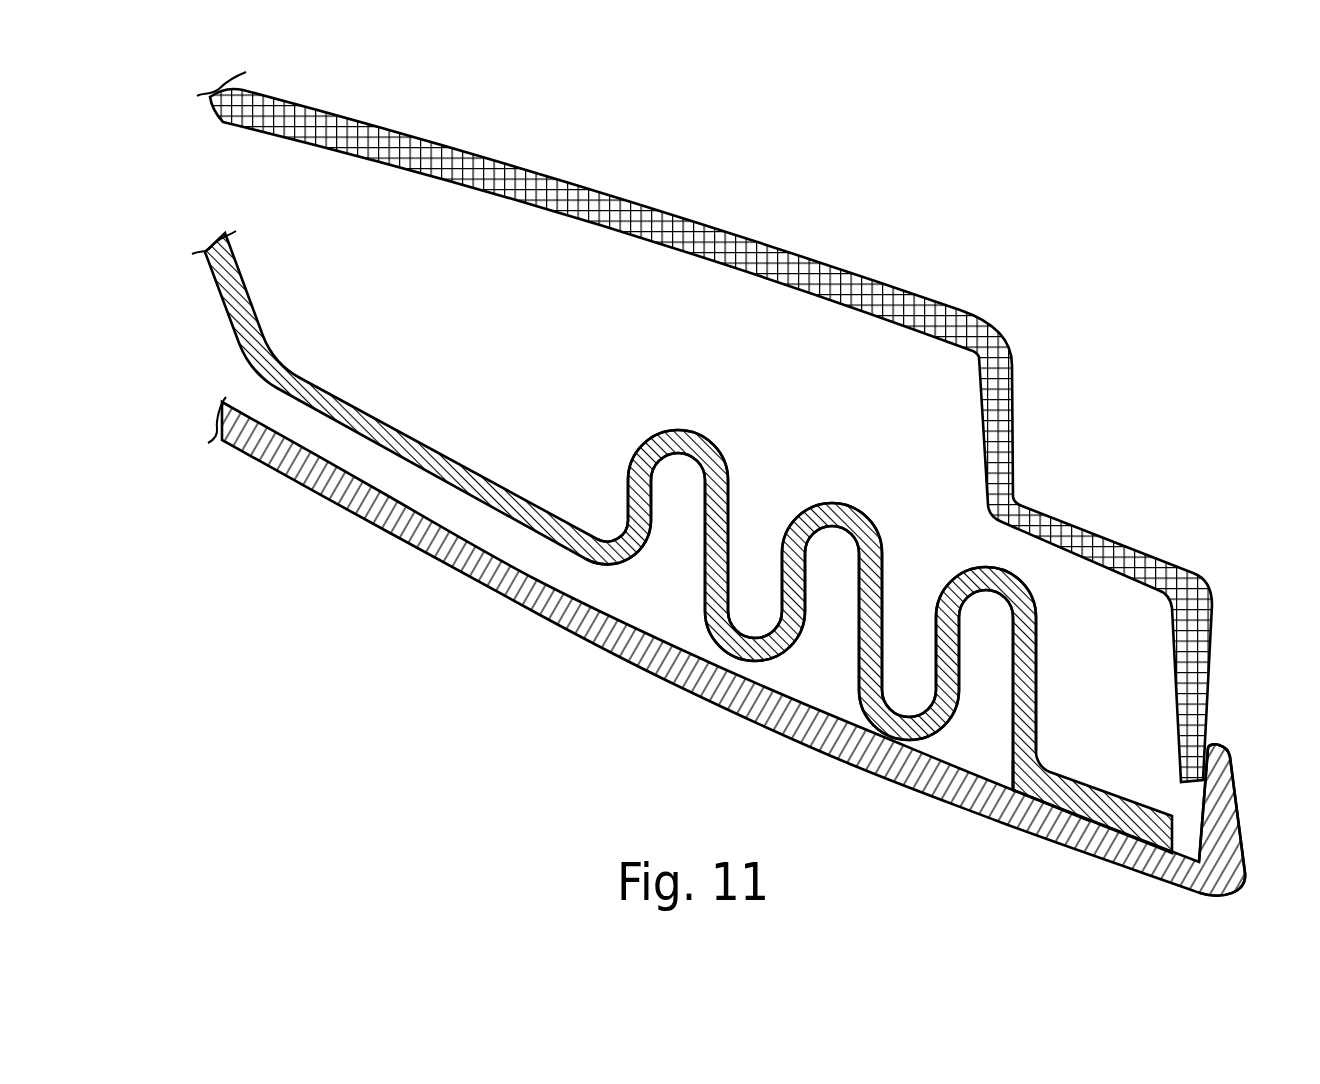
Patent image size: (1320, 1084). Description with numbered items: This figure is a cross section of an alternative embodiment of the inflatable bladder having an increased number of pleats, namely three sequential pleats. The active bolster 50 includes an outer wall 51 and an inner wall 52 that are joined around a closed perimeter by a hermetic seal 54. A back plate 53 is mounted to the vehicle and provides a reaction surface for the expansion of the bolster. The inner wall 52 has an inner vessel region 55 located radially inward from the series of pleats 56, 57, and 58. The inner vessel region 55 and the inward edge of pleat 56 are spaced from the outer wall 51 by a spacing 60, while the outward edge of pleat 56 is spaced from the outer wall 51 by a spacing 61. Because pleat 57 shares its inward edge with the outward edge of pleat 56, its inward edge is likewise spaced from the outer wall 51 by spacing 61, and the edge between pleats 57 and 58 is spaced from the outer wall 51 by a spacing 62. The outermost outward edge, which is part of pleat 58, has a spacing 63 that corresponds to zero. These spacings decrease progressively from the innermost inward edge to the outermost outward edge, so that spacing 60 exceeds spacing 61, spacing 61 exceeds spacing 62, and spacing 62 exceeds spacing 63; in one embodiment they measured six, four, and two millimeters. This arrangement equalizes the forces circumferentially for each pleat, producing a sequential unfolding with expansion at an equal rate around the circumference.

The active bolster 50 is at (1162, 390).
The outer wall 51 is at (428, 554).
The inner wall 52 is at (390, 428).
The back plate 53 is at (637, 194).
The hermetic seal 54 is at (1107, 829).
The inner vessel region 55 is at (320, 412).
The pleat 56 is at (672, 430).
The pleat 57 is at (838, 503).
The pleat 58 is at (972, 568).
The spacing 60 is at (583, 558).
The spacing 61 is at (731, 657).
The spacing 62 is at (885, 736).
The spacing 63 is at (1000, 786).